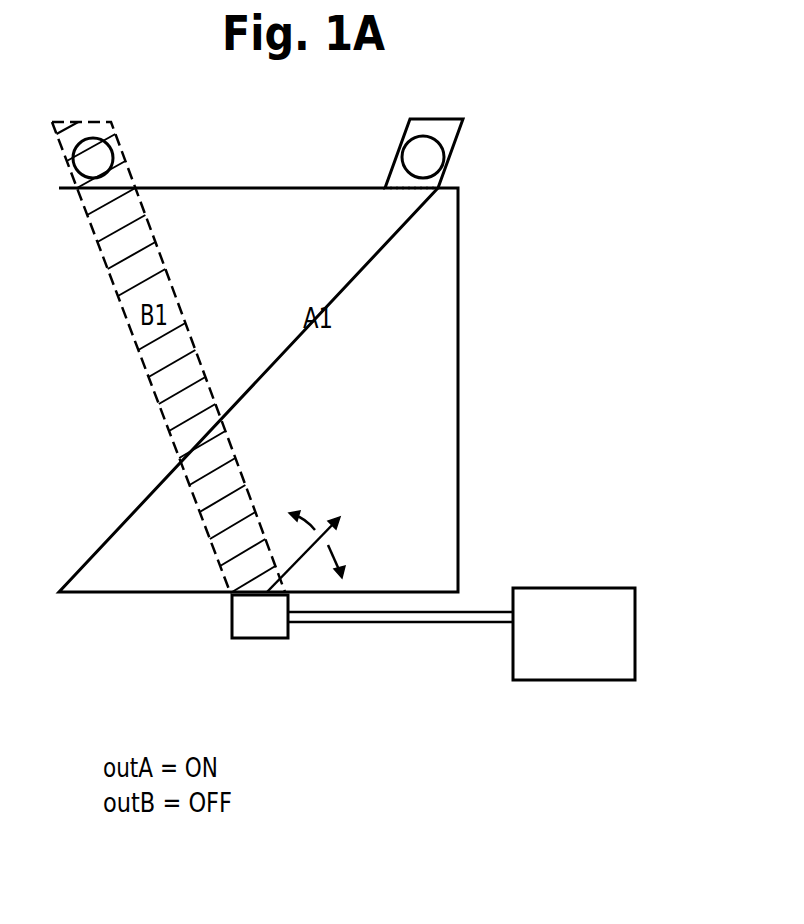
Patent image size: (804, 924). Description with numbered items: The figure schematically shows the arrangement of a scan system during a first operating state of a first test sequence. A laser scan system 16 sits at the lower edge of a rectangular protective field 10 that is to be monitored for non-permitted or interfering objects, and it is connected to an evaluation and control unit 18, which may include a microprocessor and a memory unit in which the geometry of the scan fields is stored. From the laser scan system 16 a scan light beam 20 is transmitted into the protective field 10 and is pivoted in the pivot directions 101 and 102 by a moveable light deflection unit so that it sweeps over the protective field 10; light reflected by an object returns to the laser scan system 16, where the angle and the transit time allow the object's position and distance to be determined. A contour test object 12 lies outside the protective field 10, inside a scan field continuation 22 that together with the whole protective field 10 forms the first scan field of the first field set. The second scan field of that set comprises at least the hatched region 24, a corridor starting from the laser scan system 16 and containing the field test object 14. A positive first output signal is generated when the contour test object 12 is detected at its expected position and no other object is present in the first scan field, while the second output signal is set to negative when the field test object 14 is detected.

The protective field 10 is at (460, 375).
The contour test object 12 is at (432, 156).
The field test object 14 is at (122, 156).
The laser scan system 16 is at (263, 627).
The evaluation and control unit 18 is at (572, 667).
The scan light beam 20 is at (300, 560).
The scan field continuation 22 is at (393, 163).
The hatched region 24 is at (180, 450).
The pivot direction 101 is at (310, 522).
The pivot direction 102 is at (330, 549).